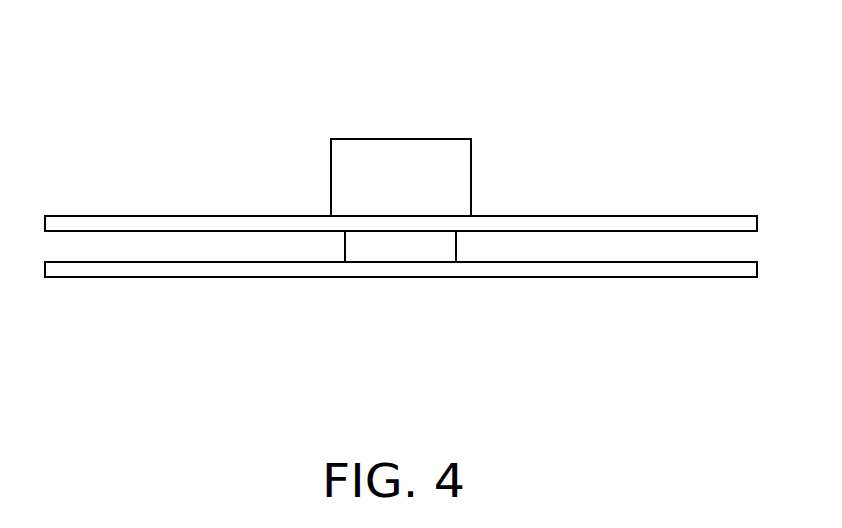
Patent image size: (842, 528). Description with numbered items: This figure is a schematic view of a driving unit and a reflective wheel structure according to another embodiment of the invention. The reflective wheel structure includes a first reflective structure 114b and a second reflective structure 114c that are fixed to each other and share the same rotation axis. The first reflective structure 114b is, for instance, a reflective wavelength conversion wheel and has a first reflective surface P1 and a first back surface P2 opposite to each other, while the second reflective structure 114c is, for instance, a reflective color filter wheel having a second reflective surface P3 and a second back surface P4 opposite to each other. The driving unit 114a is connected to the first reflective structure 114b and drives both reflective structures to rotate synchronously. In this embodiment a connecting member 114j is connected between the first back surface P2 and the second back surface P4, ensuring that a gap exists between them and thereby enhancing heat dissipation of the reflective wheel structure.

The driving unit 114a is at (417, 160).
The first reflective structure 114b is at (727, 224).
The second reflective structure 114c is at (727, 268).
The connecting member 114j is at (417, 242).
The first reflective surface P1 is at (611, 216).
The first back surface P2 is at (627, 231).
The second reflective surface P3 is at (508, 277).
The second back surface P4 is at (528, 262).